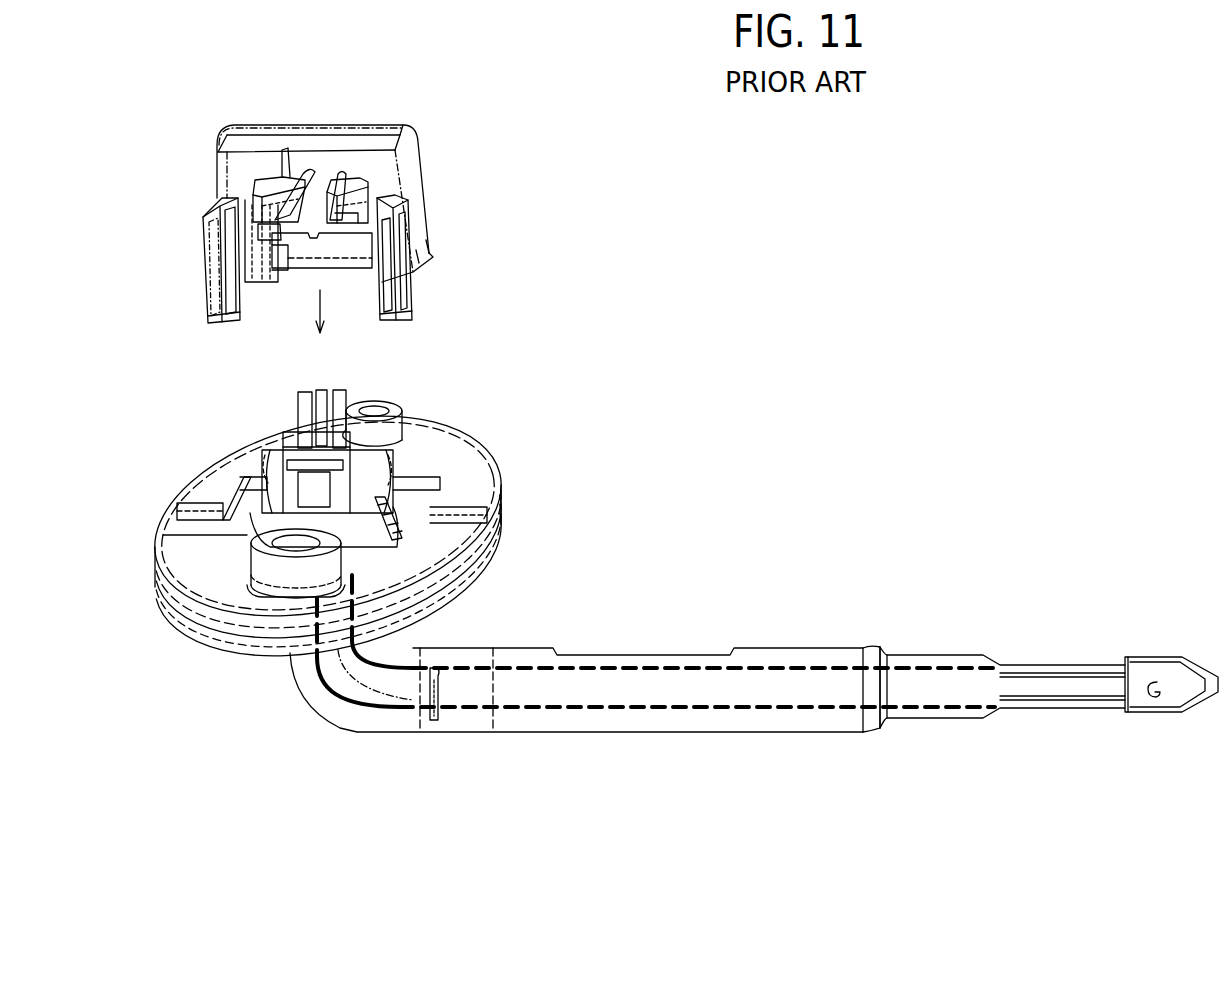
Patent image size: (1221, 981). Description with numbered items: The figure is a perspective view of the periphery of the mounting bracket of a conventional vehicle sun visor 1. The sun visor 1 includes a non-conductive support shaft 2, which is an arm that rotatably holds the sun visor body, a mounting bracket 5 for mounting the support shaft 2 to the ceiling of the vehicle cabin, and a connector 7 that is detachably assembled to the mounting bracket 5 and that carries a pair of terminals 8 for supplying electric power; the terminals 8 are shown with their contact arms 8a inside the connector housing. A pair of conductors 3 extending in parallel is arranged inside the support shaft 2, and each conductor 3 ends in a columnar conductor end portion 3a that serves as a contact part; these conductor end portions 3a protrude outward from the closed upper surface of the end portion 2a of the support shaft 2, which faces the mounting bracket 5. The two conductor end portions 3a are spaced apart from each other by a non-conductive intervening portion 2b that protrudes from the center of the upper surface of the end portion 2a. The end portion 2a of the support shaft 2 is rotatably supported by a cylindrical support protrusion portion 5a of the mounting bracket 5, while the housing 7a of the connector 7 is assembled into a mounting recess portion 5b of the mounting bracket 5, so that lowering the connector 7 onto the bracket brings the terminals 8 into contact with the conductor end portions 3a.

The vehicle sun visor 1 is at (640, 393).
The support shaft 2 is at (507, 734).
The end portion 2a is at (375, 452).
The intervening portion 2b is at (318, 392).
The conductors 3 is at (675, 667).
The conductor end portion 3a is at (303, 392).
The mounting bracket 5 is at (496, 463).
The cylindrical support protrusion portion 5a is at (372, 500).
The mounting recess portion 5b is at (240, 527).
The connector 7 is at (427, 192).
The housing 7a is at (216, 166).
The terminals 8 is at (298, 217).
The latch arm 8a is at (307, 172).